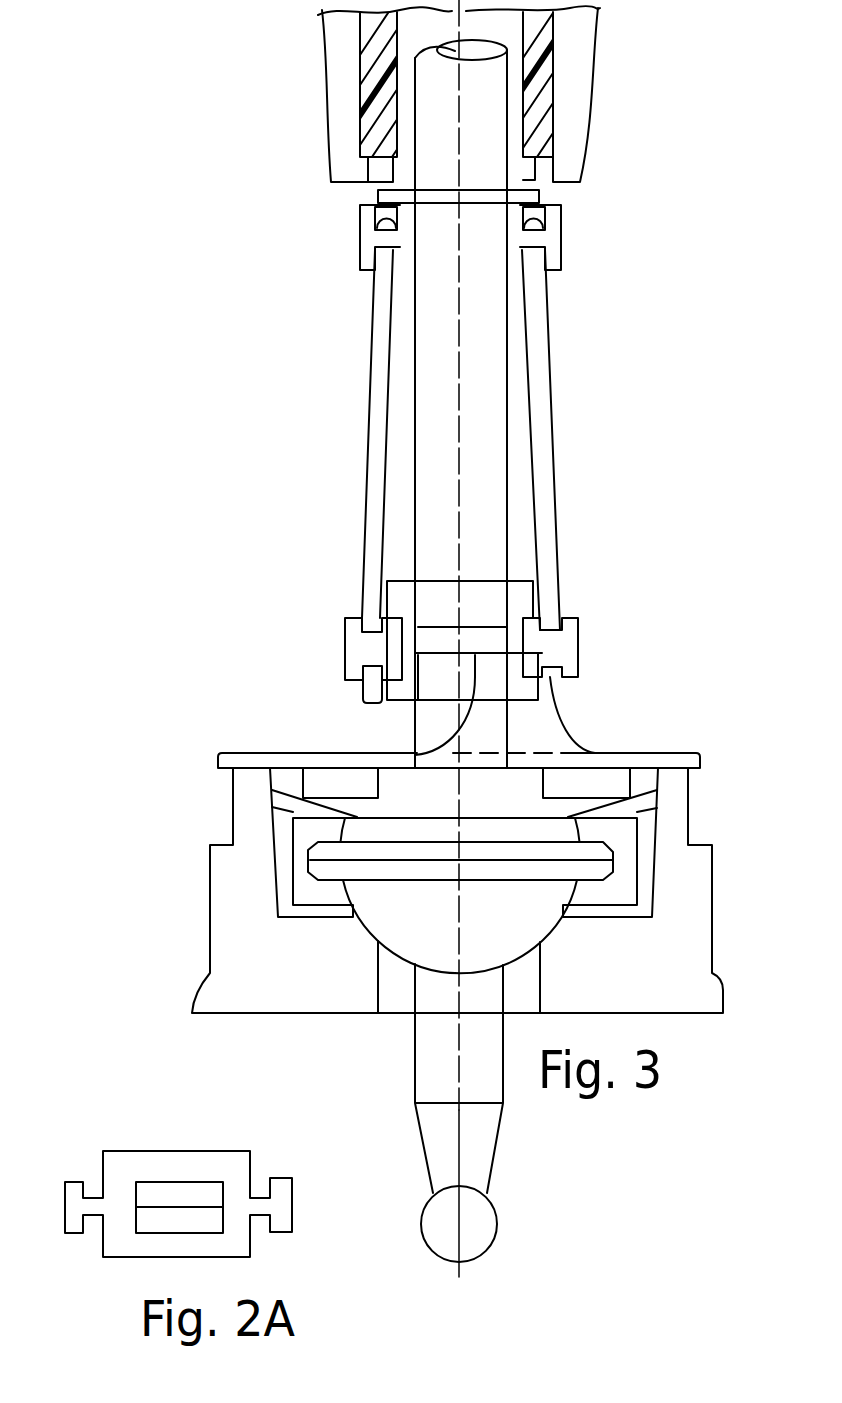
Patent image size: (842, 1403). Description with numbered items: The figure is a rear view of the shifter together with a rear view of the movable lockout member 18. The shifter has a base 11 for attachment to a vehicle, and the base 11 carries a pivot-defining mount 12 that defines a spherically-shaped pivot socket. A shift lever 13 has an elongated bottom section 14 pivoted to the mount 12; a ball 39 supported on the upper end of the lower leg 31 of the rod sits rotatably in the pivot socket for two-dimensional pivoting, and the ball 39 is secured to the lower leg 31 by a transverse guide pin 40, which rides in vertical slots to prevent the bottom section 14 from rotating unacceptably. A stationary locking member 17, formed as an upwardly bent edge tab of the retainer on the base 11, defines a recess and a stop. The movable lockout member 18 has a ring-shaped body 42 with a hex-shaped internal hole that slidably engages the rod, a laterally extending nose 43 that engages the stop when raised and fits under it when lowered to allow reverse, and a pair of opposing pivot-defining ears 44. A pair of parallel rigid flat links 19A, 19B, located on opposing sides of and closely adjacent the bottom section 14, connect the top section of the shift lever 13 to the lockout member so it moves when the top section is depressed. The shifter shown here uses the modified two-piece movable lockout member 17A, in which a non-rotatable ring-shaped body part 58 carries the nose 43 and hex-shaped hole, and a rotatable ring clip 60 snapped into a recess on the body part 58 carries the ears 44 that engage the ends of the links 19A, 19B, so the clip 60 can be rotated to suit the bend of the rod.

In FIG. 3, the base 11 is at (185, 752).
In FIG. 3, the pivot-defining mount 12 is at (712, 922).
In FIG. 3, the shift lever 13 is at (318, 695).
In FIG. 3, the elongated bottom section 14 is at (507, 452).
In FIG. 3, the stationary locking member 17 is at (565, 716).
In FIG. 3, the modified movable lockout member 17A is at (336, 649).
In FIG. 2A, the movable lockout member 18 is at (261, 1136).
In FIG. 3, the rigid flat link 19A is at (372, 349).
In FIG. 3, the rigid flat link 19B is at (553, 368).
In FIG. 3, the lower leg 31 is at (415, 1077).
In FIG. 3, the ball 39 is at (510, 933).
In FIG. 3, the transverse guide pin 40 is at (397, 870).
In FIG. 2A, the ring-shaped body 42 is at (120, 1260).
In FIG. 3, the nose 43 is at (433, 680).
In FIG. 2A, the nose 43 is at (188, 1227).
In FIG. 3, the pivot-defining ears 44 is at (346, 626).
In FIG. 2A, the pivot-defining ears 44 is at (63, 1222).
In FIG. 3, the non-rotatable ring-shaped body part 58 is at (473, 580).
In FIG. 3, the rotatable ring clip 60 is at (447, 630).